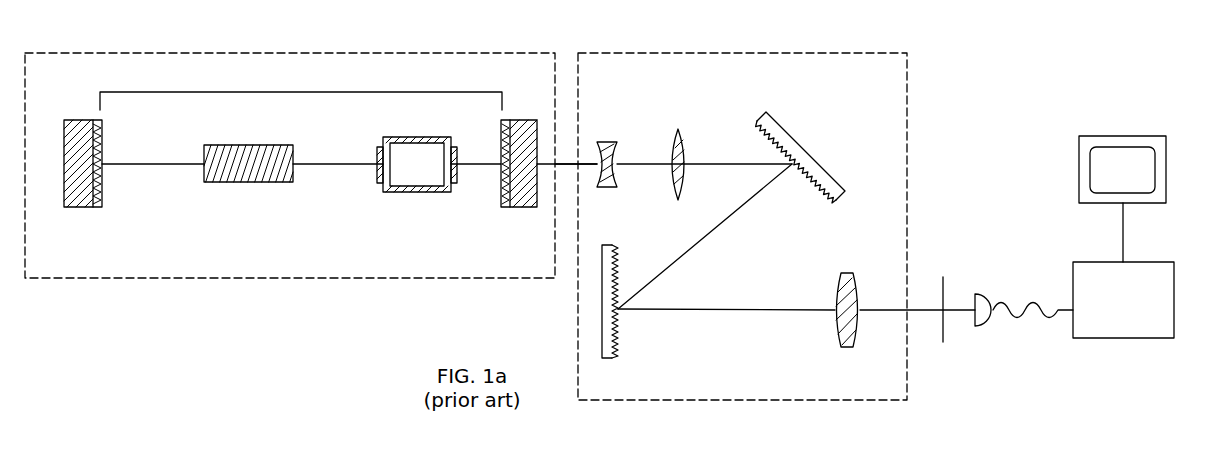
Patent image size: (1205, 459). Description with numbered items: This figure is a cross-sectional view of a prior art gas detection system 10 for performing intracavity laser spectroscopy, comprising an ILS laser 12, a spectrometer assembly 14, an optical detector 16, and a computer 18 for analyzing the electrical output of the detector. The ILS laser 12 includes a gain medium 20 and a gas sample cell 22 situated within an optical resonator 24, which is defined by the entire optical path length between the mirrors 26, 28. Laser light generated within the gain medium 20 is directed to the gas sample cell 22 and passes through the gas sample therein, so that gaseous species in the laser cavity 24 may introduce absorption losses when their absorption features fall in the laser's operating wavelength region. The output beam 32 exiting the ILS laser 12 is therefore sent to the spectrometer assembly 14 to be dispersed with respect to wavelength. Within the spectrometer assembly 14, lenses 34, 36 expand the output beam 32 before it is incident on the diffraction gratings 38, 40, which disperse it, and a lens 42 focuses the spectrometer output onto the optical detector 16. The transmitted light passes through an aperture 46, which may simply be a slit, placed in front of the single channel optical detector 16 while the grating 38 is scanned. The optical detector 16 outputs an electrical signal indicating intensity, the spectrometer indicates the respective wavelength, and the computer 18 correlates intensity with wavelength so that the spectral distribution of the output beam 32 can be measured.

The gas detection system 10 is at (234, 333).
The ILS laser 12 is at (278, 278).
The spectrometer assembly 14 is at (770, 400).
The optical detector 16 is at (988, 322).
The computer 18 is at (1146, 328).
The gain medium 20 is at (240, 182).
The gas sample cell 22 is at (416, 192).
The optical resonator 24 is at (258, 92).
The mirror 26 is at (80, 207).
The mirror 28 is at (527, 207).
The output beam 32 is at (588, 164).
The lens 34 is at (608, 140).
The lens 36 is at (680, 129).
The diffraction grating 38 is at (777, 128).
The diffraction grating 40 is at (618, 334).
The lens 42 is at (840, 344).
The aperture 46 is at (944, 292).